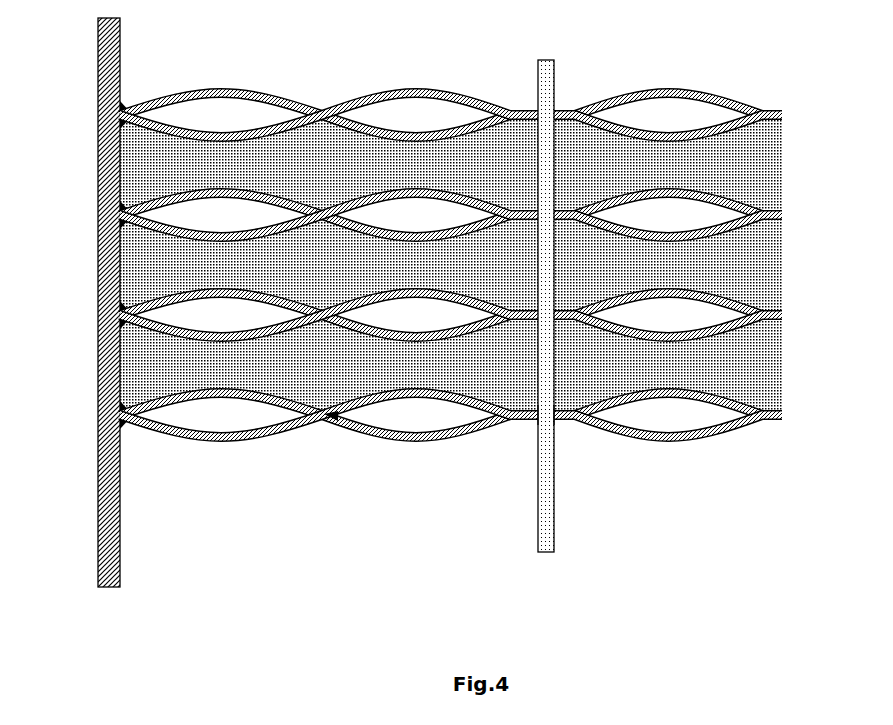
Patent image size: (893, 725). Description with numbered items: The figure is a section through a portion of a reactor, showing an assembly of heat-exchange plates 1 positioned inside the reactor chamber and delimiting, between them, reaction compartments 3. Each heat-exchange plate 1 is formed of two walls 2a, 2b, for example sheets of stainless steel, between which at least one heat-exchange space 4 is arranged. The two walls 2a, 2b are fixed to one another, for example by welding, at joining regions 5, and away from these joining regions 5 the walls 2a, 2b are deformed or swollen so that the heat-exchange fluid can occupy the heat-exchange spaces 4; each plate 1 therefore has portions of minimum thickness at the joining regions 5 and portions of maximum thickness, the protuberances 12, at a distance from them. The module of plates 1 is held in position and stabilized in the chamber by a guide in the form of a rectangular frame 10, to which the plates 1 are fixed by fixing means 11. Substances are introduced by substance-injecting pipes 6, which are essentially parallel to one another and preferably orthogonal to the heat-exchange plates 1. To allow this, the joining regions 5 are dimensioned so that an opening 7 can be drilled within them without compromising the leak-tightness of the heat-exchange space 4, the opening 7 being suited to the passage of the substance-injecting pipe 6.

The heat-exchange plate 1 is at (491, 243).
The wall 2a is at (260, 88).
The wall 2b is at (399, 138).
The reaction compartment 3 is at (748, 173).
The heat-exchange space 4 is at (697, 123).
The joining region 5 is at (325, 428).
The substance-injecting pipe 6 is at (548, 508).
The opening 7 is at (537, 420).
The rectangular frame 10 is at (97, 312).
The fixing means 11 is at (126, 428).
The protuberance 12 is at (433, 88).